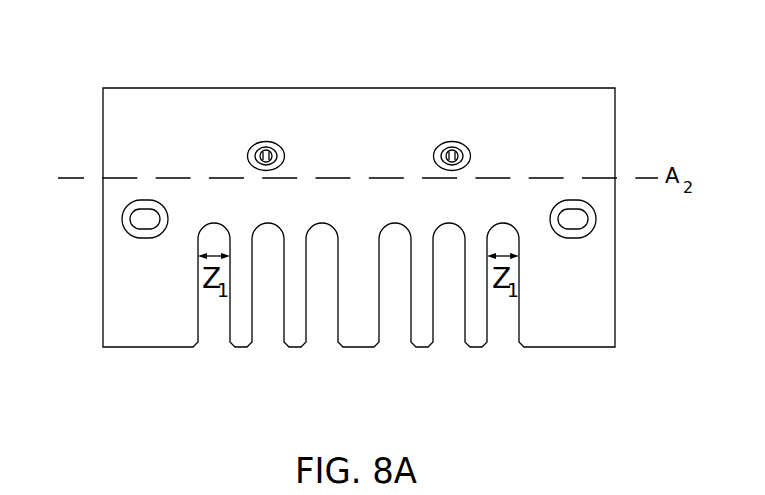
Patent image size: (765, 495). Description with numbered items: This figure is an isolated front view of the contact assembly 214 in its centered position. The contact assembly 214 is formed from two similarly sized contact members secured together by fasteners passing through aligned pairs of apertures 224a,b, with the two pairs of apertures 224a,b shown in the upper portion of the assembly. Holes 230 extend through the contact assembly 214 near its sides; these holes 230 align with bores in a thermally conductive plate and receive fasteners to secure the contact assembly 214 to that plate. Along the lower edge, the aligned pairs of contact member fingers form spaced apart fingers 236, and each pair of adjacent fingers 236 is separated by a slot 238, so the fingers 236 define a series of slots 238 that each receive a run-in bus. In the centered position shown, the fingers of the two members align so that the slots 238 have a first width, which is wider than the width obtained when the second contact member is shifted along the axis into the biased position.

The contact assembly 214 is at (538, 84).
The apertures 224a,b is at (265, 139).
The holes 230 is at (126, 221).
The fingers 236 is at (476, 338).
The slots 238 is at (214, 337).